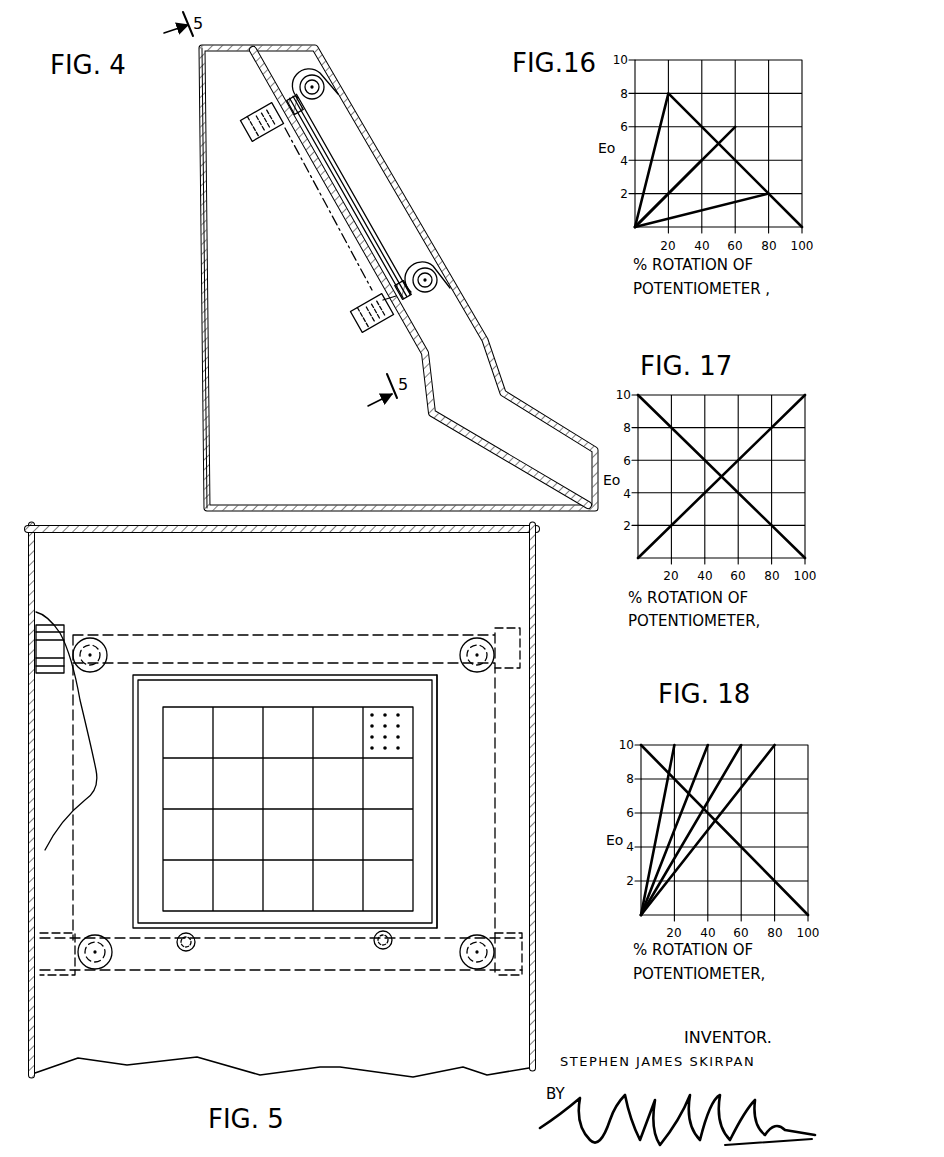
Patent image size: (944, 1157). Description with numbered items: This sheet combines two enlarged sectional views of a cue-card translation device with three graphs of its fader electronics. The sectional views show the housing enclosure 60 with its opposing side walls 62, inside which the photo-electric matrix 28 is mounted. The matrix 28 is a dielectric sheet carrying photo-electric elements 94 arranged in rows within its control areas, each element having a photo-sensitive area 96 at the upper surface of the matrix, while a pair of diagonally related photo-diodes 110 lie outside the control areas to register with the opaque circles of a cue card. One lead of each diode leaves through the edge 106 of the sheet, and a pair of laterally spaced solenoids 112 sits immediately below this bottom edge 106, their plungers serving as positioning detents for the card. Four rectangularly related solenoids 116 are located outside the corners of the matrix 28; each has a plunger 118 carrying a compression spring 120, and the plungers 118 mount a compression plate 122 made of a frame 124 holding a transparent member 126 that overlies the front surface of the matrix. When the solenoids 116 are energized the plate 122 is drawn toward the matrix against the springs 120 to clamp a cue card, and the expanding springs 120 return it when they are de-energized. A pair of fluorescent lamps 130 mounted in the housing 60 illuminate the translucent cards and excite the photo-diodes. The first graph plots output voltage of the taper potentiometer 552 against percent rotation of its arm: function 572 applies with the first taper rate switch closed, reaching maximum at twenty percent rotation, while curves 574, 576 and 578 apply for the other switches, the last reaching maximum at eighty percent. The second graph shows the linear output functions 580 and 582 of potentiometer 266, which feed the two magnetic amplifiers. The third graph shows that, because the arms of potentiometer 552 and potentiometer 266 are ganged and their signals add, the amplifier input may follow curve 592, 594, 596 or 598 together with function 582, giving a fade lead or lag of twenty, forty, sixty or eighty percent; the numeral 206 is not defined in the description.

In FIG. 4, the matrix 28 is at (345, 243).
In FIG. 5, the matrix 28 is at (474, 785).
In FIG. 4, the housing enclosure 60 is at (200, 283).
In FIG. 4, the side walls 62 is at (225, 323).
In FIG. 5, the photo-electric elements 94 is at (398, 752).
In FIG. 5, the photo-sensitive area 96 is at (370, 720).
In FIG. 5, the edge 106 is at (225, 930).
In FIG. 5, the photo-diodes 110 is at (427, 722).
In FIG. 5, the solenoids 112 is at (182, 955).
In FIG. 4, the solenoids 116 is at (252, 140).
In FIG. 5, the solenoids 116 is at (90, 638).
In FIG. 4, the plunger 118 is at (388, 302).
In FIG. 4, the compression spring 120 is at (408, 298).
In FIG. 4, the compression plate 122 is at (334, 150).
In FIG. 4, the frame 124 is at (292, 98).
In FIG. 4, the transparent member 126 is at (352, 212).
In FIG. 4, the fluorescent lamps 130 is at (320, 80).
In FIG. 5, the fluorescent lamps 130 is at (52, 640).
In FIG. 18, the potentiometer 206 is at (784, 974).
In FIG. 17, the potentiometer 266 is at (779, 621).
In FIG. 16, the potentiometer 552 is at (796, 289).
In FIG. 16, the function 572 is at (660, 118).
In FIG. 16, the curve 574 is at (680, 156).
In FIG. 16, the curve 576 is at (710, 175).
In FIG. 16, the curve 578 is at (744, 203).
In FIG. 17, the curve 580 is at (690, 505).
In FIG. 17, the curve 582 is at (696, 424).
In FIG. 18, the curve 582 is at (742, 850).
In FIG. 18, the curve 592 is at (668, 757).
In FIG. 18, the curve 594 is at (700, 757).
In FIG. 18, the curve 596 is at (740, 757).
In FIG. 18, the curve 598 is at (776, 757).